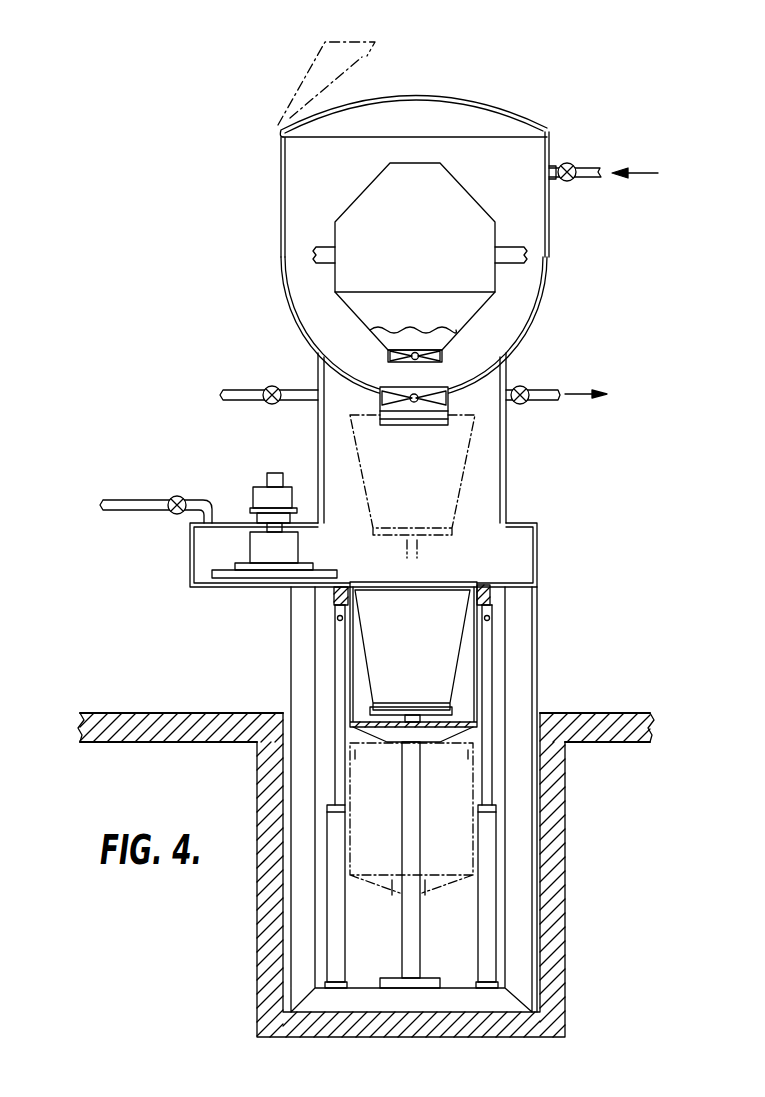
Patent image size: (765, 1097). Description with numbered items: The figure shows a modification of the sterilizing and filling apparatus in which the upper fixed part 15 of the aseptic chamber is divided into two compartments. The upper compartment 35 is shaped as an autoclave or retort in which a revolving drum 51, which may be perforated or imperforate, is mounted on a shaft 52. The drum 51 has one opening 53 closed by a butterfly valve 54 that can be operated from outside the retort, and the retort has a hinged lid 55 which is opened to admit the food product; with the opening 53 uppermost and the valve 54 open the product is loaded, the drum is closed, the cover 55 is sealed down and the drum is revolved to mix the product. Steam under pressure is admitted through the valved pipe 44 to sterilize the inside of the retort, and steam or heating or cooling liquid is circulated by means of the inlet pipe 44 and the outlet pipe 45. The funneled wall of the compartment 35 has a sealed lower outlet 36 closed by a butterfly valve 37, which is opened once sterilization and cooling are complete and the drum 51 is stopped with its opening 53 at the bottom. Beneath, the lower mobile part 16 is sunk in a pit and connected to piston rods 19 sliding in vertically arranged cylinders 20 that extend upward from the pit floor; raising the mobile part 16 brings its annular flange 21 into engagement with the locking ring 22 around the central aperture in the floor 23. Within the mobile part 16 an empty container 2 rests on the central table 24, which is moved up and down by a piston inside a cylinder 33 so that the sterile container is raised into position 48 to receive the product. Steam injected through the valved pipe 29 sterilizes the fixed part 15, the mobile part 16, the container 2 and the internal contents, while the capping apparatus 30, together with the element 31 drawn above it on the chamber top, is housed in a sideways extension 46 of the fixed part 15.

The container 2 is at (456, 677).
The upper fixed part 15 is at (537, 560).
The lower mobile part 16 is at (470, 713).
The piston rods 19 is at (336, 737).
The cylinders 20 is at (335, 910).
The annular flange 21 is at (489, 604).
The locking ring 22 is at (490, 593).
The floor 23 is at (537, 584).
The central table 24 is at (365, 708).
The valved pipe 29 is at (162, 475).
The capping apparatus 30 is at (262, 546).
The coupling device 31 is at (263, 486).
The cylinder 33 is at (418, 948).
The upper compartment 35 is at (553, 232).
The lower outlet 36 is at (452, 420).
The butterfly valve 37 is at (426, 408).
The valved steam feed pipe 44 is at (588, 168).
The valved steam inlet pipe 45 is at (243, 390).
The sideways extension 46 is at (190, 548).
The container position 48 is at (460, 500).
The revolving drum 51 is at (362, 192).
The shaft 52 is at (313, 252).
The opening 53 is at (443, 355).
The butterfly valve 54 is at (450, 338).
The hinged lid 55 is at (527, 118).